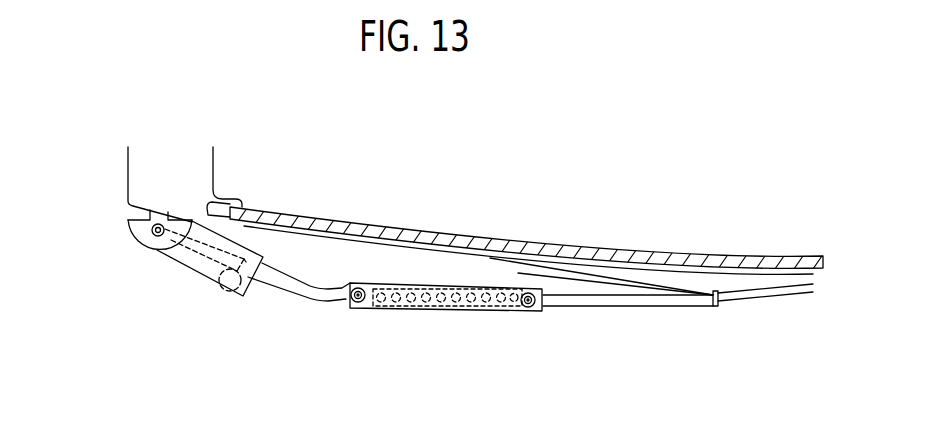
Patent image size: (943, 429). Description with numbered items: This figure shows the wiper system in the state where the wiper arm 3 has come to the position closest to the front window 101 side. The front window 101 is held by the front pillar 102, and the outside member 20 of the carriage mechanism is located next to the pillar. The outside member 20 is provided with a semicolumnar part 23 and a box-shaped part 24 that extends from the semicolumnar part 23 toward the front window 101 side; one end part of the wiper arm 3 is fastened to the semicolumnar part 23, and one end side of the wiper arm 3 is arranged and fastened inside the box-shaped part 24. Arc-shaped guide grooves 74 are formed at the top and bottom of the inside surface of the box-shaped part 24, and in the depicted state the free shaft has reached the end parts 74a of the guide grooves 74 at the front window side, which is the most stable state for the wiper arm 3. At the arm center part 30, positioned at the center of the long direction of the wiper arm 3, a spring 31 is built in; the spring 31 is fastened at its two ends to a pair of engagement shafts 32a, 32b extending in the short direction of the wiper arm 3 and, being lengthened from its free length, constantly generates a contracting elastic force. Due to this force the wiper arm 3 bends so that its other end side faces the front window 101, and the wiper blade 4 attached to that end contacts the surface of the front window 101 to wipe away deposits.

The front pillar 102 is at (136, 172).
The front window 101 is at (316, 219).
The wiper blade 4 is at (613, 264).
The outside member 20 is at (172, 298).
The semicolumnar part 23 is at (134, 239).
The box-shaped part 24 is at (179, 261).
The guide groove 74 is at (220, 291).
The end part of guide groove 74a is at (248, 255).
The wiper arm 3 is at (273, 289).
The arm center part 30 is at (437, 310).
The spring 31 is at (473, 312).
The engagement shaft 32a is at (353, 308).
The engagement shaft 32b is at (533, 311).